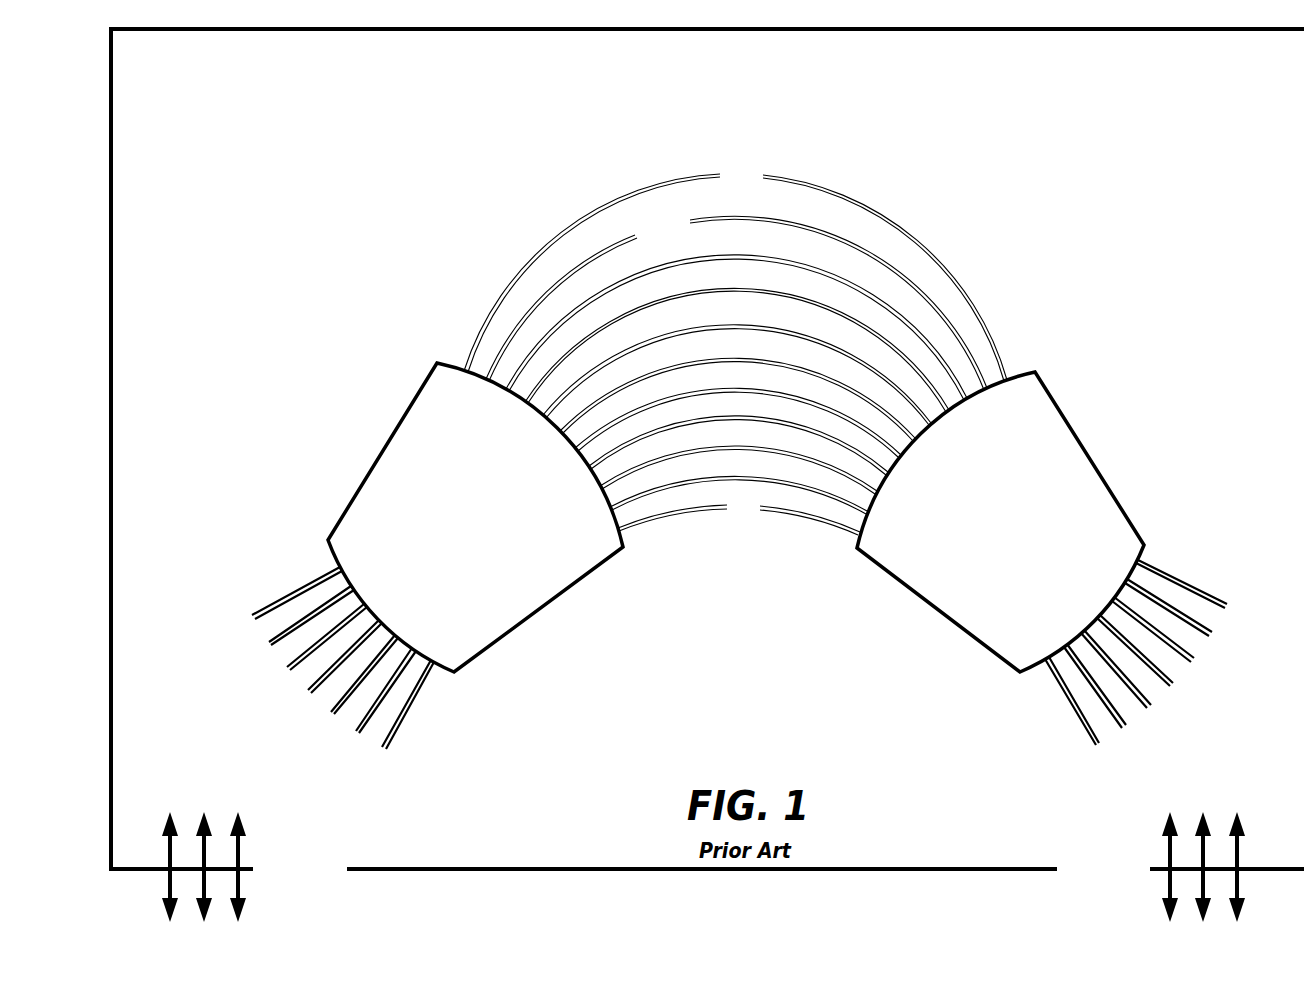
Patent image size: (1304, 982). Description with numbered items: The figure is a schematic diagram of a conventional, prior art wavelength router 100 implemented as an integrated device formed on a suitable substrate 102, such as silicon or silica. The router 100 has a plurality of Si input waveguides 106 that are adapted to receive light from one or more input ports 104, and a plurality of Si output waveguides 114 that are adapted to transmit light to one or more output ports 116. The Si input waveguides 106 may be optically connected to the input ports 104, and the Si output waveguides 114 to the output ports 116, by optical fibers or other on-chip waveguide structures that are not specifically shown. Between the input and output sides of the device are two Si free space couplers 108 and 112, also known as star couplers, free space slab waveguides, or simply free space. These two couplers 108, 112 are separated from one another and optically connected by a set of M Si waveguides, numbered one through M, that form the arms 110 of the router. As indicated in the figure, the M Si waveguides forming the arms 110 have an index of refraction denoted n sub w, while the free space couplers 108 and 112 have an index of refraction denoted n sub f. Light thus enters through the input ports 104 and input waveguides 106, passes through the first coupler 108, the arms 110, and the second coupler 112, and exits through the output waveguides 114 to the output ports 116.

The wavelength router 100 is at (1148, 39).
The substrate 102 is at (1222, 144).
The input ports 104 is at (126, 628).
The Si input waveguides 106 is at (319, 617).
The Si free space coupler 108 is at (447, 690).
The arms 110 is at (447, 102).
The Si free space coupler 112 is at (1027, 690).
The Si output waveguides 114 is at (1153, 606).
The output ports 116 is at (1255, 620).